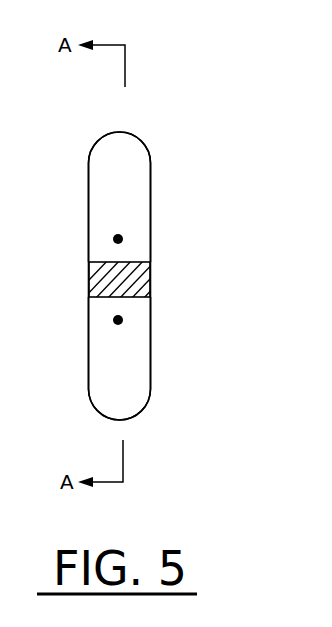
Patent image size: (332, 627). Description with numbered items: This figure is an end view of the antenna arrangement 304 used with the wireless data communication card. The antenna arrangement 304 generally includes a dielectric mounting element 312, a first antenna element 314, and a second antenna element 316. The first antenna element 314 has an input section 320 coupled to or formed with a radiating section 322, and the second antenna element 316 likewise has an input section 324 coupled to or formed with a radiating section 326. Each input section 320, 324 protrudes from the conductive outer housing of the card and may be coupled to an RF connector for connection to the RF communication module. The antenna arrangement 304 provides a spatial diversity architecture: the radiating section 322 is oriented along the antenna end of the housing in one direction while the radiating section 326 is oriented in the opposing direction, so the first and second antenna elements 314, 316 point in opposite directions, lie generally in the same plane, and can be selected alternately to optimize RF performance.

The antenna arrangement 304 is at (231, 149).
The dielectric mounting element 312 is at (130, 290).
The first antenna element 314 is at (136, 116).
The second antenna element 316 is at (160, 402).
The input section 320 is at (113, 239).
The radiating section 322 is at (130, 213).
The input section 324 is at (113, 320).
The radiating section 326 is at (130, 383).